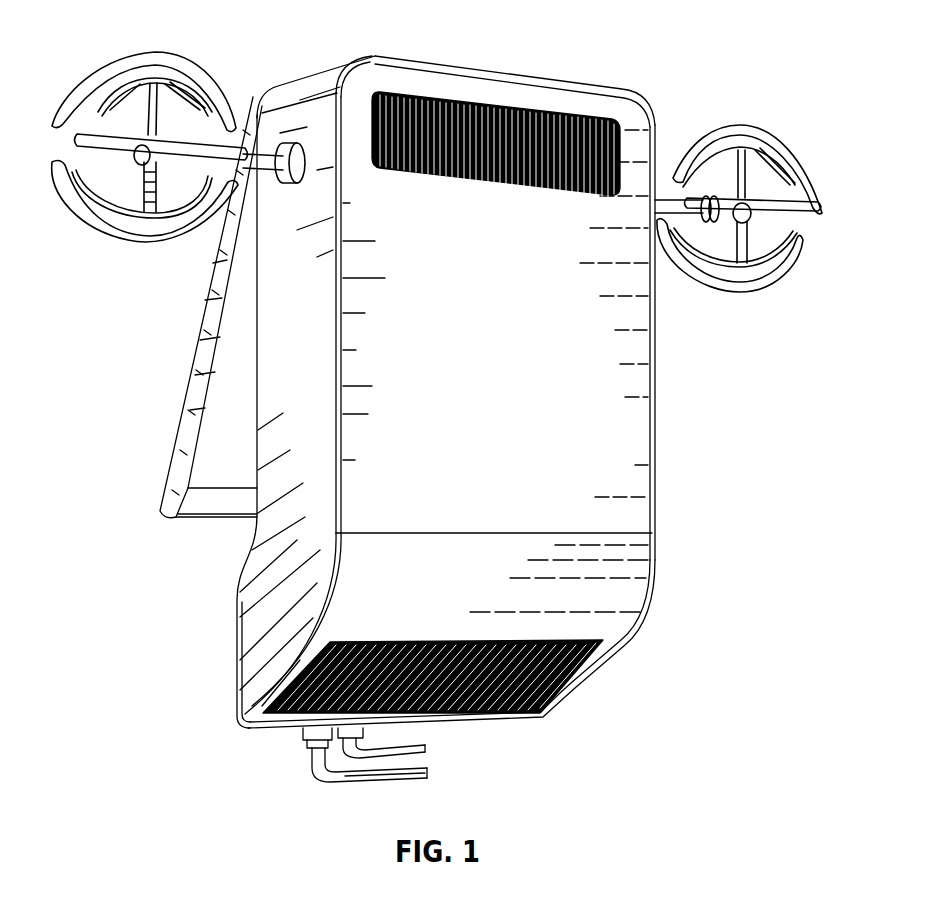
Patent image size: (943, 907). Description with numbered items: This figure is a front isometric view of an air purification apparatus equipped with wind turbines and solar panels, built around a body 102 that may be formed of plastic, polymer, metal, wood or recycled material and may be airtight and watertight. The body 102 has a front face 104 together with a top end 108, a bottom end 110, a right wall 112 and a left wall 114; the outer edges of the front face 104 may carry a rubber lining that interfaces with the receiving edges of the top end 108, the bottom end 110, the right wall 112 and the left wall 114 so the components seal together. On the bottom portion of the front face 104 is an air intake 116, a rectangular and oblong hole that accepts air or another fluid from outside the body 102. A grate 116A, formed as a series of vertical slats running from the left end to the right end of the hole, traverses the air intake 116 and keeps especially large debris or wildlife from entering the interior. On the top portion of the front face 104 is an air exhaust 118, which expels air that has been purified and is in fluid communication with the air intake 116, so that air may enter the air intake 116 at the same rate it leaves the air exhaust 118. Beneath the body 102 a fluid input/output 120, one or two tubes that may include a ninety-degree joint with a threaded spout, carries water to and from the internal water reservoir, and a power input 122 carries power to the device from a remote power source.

The body 102 is at (612, 412).
The front face 104 is at (580, 483).
The top end 108 is at (551, 78).
The bottom end 110 is at (237, 698).
The right wall 112 is at (657, 347).
The left wall 114 is at (307, 370).
The air intake 116 is at (493, 677).
The grate 116A is at (567, 658).
The air exhaust 118 is at (501, 123).
The fluid input/output 120 is at (307, 755).
The power input 122 is at (324, 778).